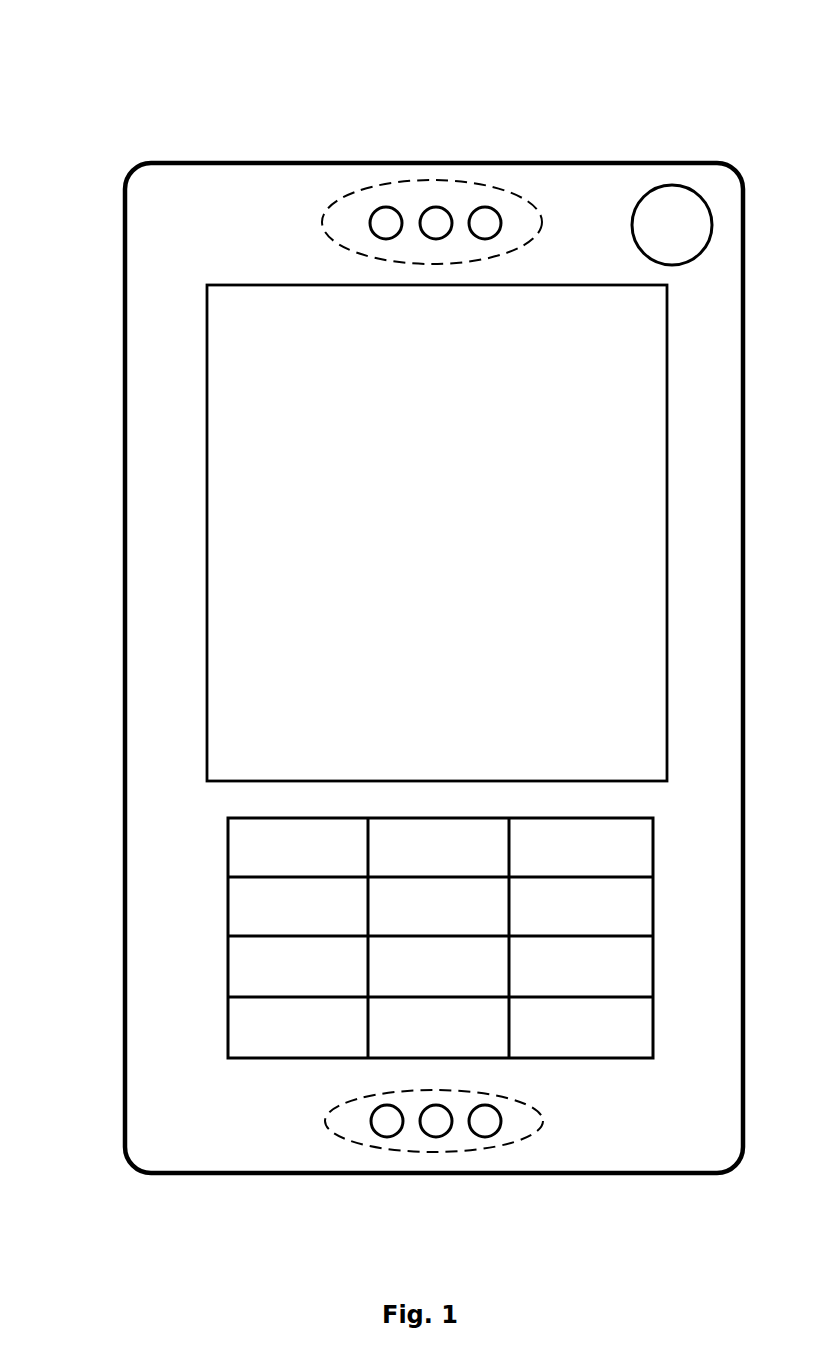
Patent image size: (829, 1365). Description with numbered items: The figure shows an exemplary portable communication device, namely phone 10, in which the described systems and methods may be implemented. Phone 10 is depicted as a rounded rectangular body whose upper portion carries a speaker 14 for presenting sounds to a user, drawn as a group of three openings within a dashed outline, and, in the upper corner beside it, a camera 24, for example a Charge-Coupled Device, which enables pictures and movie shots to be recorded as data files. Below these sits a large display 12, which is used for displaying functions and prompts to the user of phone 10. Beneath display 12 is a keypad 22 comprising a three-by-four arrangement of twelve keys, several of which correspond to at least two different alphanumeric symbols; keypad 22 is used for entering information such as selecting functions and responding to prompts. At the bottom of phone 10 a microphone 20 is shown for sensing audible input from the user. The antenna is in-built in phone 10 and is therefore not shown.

The phone 10 is at (182, 98).
The display 12 is at (223, 360).
The speaker 14 is at (386, 187).
The microphone 20 is at (358, 1142).
The keypad 22 is at (249, 855).
The camera 24 is at (658, 197).